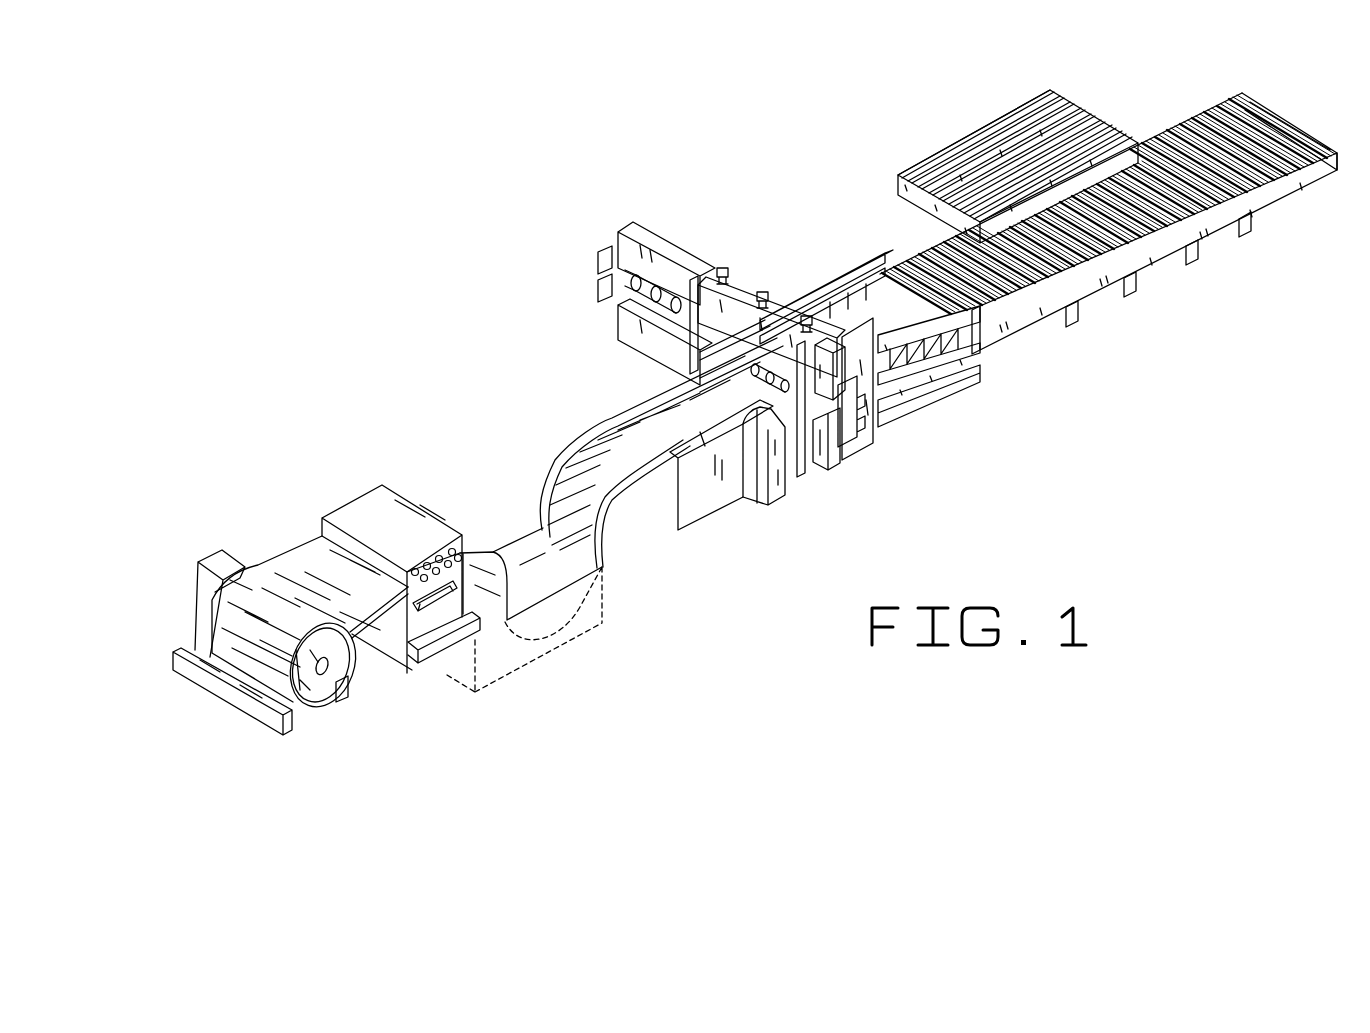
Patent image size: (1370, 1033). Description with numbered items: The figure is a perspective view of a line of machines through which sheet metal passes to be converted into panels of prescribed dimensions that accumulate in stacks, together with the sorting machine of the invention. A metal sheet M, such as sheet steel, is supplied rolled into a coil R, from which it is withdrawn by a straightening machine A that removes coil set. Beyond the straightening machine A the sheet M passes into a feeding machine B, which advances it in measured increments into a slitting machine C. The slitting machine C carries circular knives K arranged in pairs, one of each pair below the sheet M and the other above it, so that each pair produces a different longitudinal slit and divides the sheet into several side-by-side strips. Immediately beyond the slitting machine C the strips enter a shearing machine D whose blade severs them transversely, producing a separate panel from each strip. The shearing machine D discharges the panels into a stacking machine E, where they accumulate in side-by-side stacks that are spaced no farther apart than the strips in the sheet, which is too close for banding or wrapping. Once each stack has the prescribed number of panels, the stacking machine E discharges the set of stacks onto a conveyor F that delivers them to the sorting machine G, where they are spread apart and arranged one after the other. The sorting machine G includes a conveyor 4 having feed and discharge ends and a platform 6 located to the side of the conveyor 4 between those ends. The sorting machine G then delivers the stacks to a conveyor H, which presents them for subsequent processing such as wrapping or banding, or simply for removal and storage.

The straightening machine A is at (372, 517).
The coil R is at (323, 702).
The metal sheet M is at (590, 462).
The circular knives K is at (735, 393).
The feeding machine B is at (697, 486).
The slitting machine C is at (838, 445).
The shearing machine D is at (865, 425).
The stacking machine E is at (928, 400).
The conveyor F is at (1017, 338).
The sorting machine G is at (1143, 267).
The conveyor H is at (1283, 192).
The conveyor 4 is at (1138, 173).
The platform 6 is at (968, 160).